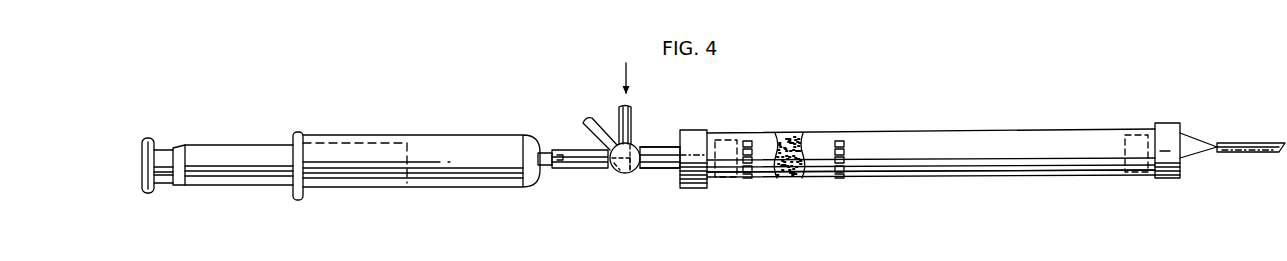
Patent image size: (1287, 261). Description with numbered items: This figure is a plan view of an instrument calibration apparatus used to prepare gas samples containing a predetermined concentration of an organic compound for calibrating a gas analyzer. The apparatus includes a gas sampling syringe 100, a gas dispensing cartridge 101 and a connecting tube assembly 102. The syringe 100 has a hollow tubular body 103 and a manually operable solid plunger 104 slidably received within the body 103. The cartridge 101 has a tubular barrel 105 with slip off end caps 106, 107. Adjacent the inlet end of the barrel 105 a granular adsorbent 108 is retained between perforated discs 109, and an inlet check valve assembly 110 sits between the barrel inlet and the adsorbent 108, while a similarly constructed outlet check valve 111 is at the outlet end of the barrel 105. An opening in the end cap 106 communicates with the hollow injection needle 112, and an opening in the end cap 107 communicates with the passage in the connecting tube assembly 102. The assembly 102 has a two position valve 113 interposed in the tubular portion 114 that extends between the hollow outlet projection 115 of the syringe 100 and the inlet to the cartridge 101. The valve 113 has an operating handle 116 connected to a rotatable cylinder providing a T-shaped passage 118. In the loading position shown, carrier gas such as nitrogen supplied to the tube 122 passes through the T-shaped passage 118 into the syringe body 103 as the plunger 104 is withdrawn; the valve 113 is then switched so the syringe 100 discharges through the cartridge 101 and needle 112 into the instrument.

The gas sampling syringe 100 is at (432, 126).
The gas dispensing cartridge 101 is at (969, 129).
The connecting tube assembly 102 is at (599, 173).
The hollow tubular body 103 is at (470, 180).
The manually operable solid plunger 104 is at (227, 178).
The tubular barrel 105 is at (975, 168).
The slip off end cap 106 is at (1165, 123).
The slip off end cap 107 is at (696, 130).
The granular adsorbent 108 is at (792, 137).
The perforated discs 109 is at (837, 180).
The inlet check valve assembly 110 is at (727, 173).
The outlet check valve 111 is at (1140, 162).
The hollow injection needle 112 is at (1228, 152).
The two position valve 113 is at (630, 174).
The tubular portion 114 is at (653, 147).
The hollow outlet projection 115 is at (553, 150).
The operating handle 116 is at (600, 146).
The T-shaped passage 118 is at (618, 175).
The tube 122 is at (631, 121).